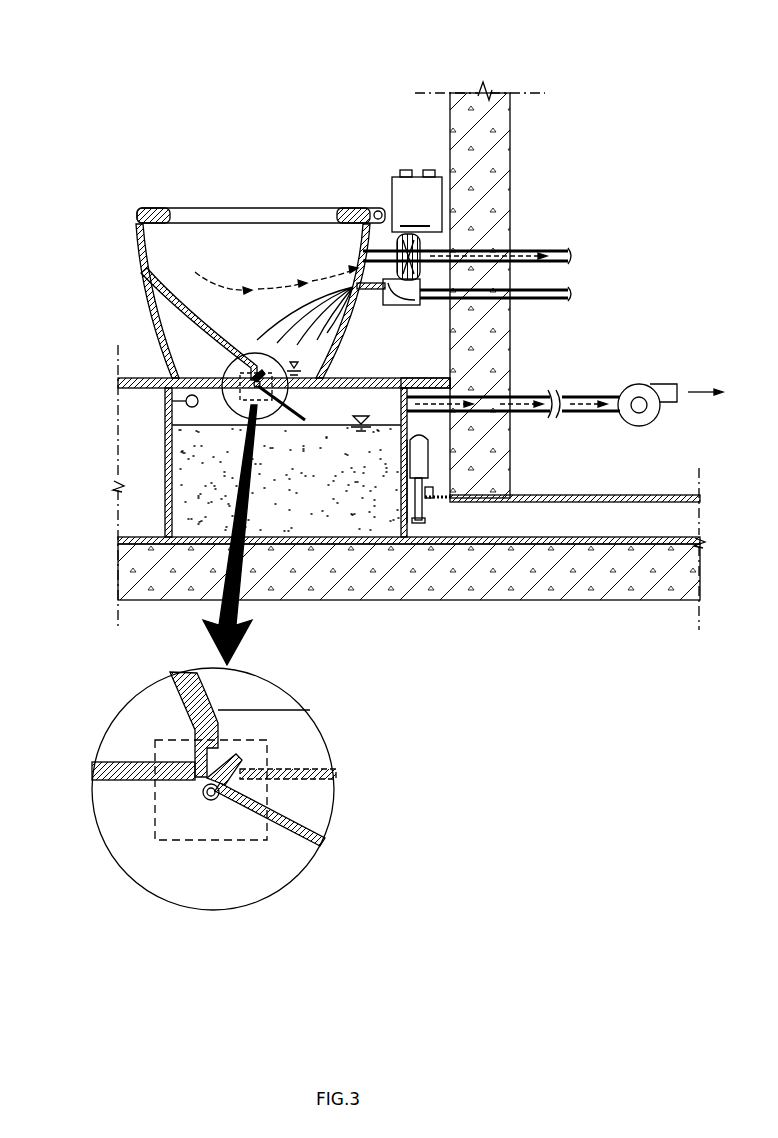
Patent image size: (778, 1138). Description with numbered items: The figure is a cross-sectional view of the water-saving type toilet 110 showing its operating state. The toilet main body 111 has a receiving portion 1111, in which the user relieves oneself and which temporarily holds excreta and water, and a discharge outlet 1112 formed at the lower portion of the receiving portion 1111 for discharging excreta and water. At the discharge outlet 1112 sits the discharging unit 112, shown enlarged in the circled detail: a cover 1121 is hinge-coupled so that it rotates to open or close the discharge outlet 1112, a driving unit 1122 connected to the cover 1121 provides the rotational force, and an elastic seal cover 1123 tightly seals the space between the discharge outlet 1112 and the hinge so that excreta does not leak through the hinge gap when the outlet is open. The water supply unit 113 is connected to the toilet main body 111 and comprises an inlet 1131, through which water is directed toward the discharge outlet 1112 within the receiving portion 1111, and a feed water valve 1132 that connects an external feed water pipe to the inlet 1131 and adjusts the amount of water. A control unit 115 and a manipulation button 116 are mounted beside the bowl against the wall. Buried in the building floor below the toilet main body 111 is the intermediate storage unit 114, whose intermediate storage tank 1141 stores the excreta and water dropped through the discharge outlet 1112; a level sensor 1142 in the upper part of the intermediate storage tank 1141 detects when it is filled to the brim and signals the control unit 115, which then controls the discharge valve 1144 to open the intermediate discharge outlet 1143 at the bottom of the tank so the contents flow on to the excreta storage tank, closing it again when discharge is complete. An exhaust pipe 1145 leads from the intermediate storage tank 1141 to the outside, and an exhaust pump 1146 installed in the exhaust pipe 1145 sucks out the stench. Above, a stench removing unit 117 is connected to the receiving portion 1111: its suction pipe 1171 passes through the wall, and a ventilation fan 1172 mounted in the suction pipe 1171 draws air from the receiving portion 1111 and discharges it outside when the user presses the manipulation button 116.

The water-saving type toilet 110 is at (118, 72).
The toilet main body 111 is at (49, 278).
The receiving portion 1111 is at (166, 300).
The discharge outlet 1112 is at (250, 357).
The discharging unit 112 is at (262, 1008).
The cover 1121 is at (293, 837).
The driving unit 1122 is at (206, 800).
The seal cover 1123 is at (228, 770).
The water supply unit 113 is at (240, 150).
The inlet 1131 is at (357, 285).
The feed water valve 1132 is at (396, 254).
The intermediate storage unit 114 is at (630, 680).
The intermediate storage tank 1141 is at (397, 530).
The level sensor 1142 is at (250, 438).
The intermediate discharge outlet 1143 is at (424, 500).
The discharge valve 1144 is at (437, 498).
The exhaust pipe 1145 is at (547, 417).
The exhaust pump 1146 is at (637, 427).
The control unit 115 is at (392, 195).
The manipulation button 116 is at (430, 170).
The stench removing unit 117 is at (611, 228).
The suction pipe 1171 is at (440, 291).
The ventilation fan 1172 is at (420, 256).